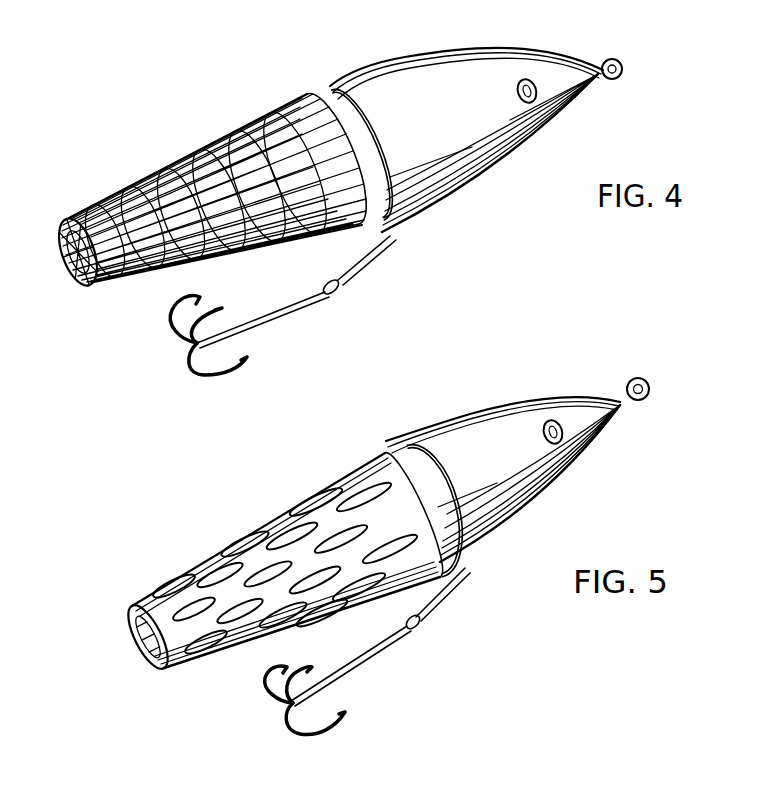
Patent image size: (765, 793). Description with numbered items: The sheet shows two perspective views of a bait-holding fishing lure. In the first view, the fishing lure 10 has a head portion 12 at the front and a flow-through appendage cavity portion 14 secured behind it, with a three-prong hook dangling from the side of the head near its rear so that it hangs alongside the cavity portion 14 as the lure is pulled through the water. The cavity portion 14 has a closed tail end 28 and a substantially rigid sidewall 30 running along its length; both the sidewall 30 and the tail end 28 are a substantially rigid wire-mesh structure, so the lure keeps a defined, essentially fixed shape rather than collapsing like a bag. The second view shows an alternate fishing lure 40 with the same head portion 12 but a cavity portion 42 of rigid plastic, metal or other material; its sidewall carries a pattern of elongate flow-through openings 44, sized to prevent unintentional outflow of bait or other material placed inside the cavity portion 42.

In FIG. 4, the fishing lure 10 is at (245, 99).
In FIG. 4, the head portion 12 is at (417, 72).
In FIG. 5, the head portion 12 is at (518, 432).
In FIG. 4, the flow-through appendage cavity portion 14 is at (158, 176).
In FIG. 4, the tail end 28 is at (72, 252).
In FIG. 4, the sidewall 30 is at (202, 238).
In FIG. 5, the fishing lure 40 is at (419, 405).
In FIG. 5, the cavity portion 42 is at (227, 540).
In FIG. 5, the flow-through openings 44 is at (307, 553).